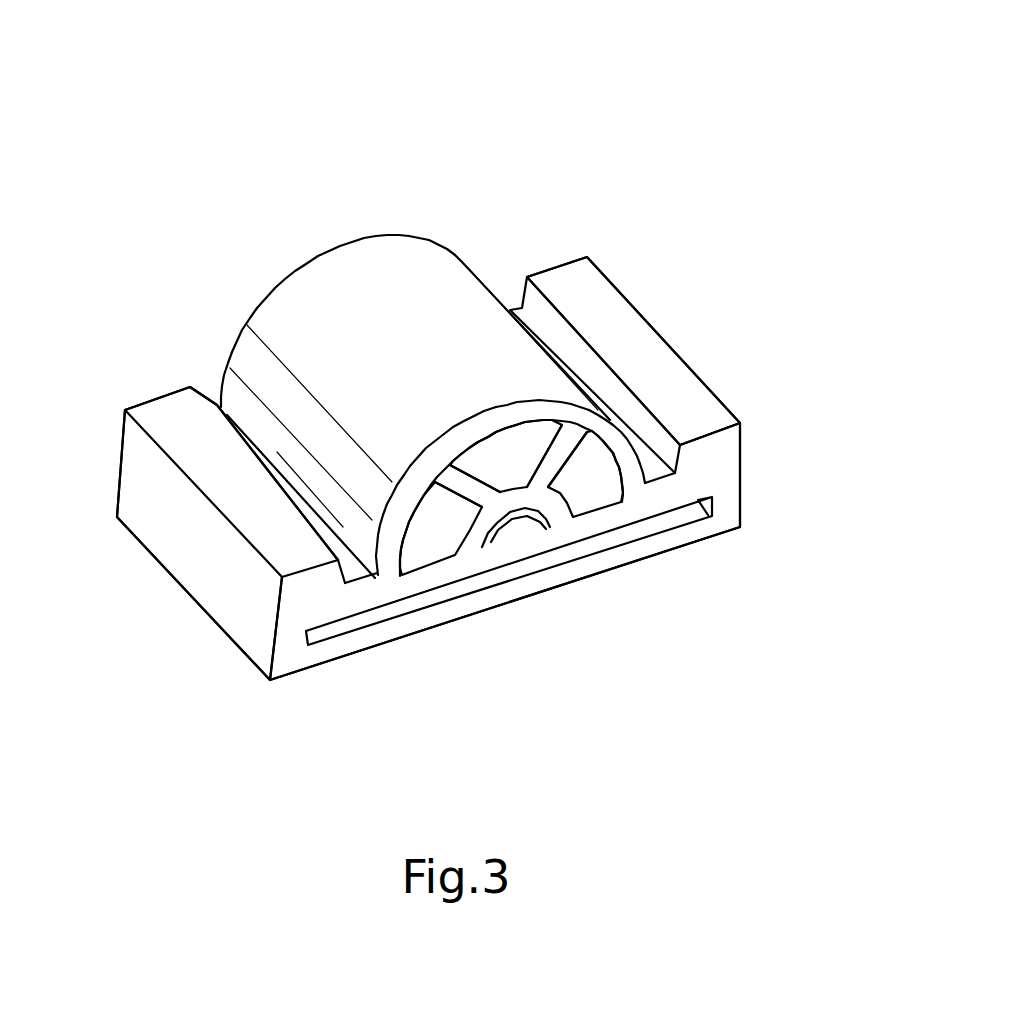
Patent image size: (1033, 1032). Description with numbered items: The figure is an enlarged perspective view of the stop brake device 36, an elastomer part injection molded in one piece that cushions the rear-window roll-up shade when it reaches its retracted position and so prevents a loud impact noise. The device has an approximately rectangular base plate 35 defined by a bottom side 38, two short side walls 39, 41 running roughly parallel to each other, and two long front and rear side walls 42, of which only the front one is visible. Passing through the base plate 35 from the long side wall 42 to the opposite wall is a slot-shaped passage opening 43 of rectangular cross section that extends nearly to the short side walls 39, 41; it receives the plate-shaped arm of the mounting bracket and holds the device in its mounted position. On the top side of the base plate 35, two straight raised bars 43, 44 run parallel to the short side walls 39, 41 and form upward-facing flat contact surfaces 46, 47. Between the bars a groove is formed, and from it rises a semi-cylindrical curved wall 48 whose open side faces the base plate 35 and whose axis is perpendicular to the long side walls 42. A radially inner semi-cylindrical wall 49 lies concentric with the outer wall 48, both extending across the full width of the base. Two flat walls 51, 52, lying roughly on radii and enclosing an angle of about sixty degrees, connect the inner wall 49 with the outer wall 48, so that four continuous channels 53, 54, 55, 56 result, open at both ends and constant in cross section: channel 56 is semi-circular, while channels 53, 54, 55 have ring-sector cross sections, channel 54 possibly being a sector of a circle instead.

The base plate 35 is at (276, 693).
The stop brake device 36 is at (687, 165).
The bottom side 38 is at (407, 642).
The short side wall 39 is at (238, 630).
The short side wall 41 is at (737, 480).
The long side wall 42 is at (560, 575).
The slot-shaped passage opening 43 is at (684, 337).
The raised bar 44 is at (172, 474).
The contact surface 46 is at (577, 285).
The contact surface 47 is at (167, 415).
The semi-cylindrical wall 48 is at (318, 278).
The inner semi-cylindrical wall 49 is at (478, 533).
The flat wall 51 is at (547, 460).
The flat wall 52 is at (460, 483).
The channel 53 is at (417, 553).
The channel 54 is at (503, 445).
The channel 55 is at (575, 488).
The channel 56 is at (507, 528).